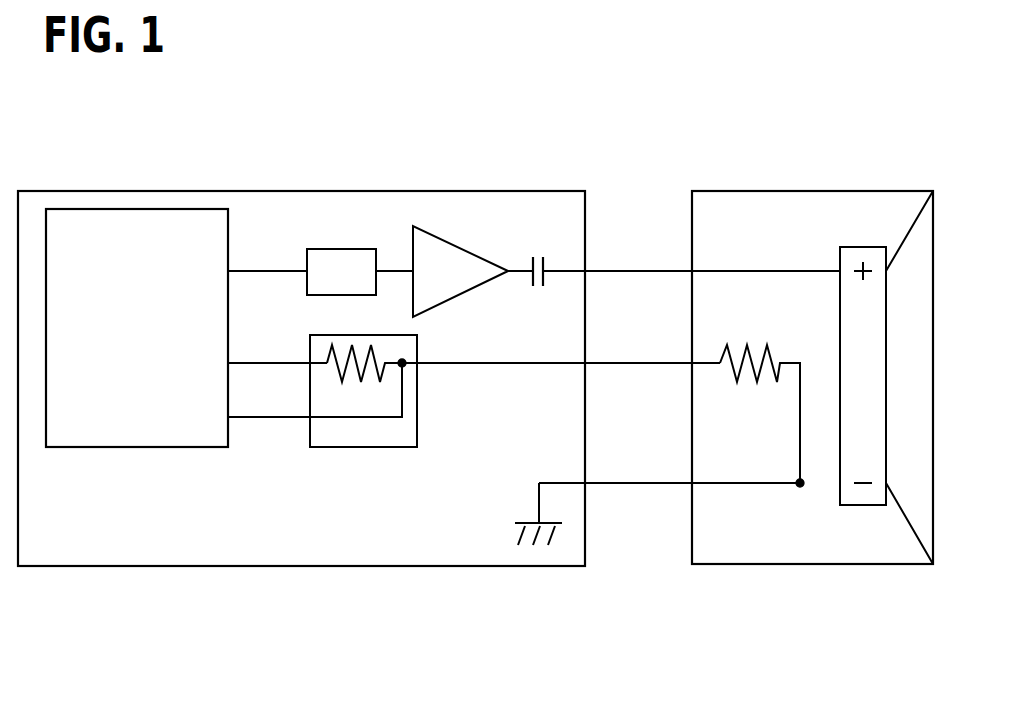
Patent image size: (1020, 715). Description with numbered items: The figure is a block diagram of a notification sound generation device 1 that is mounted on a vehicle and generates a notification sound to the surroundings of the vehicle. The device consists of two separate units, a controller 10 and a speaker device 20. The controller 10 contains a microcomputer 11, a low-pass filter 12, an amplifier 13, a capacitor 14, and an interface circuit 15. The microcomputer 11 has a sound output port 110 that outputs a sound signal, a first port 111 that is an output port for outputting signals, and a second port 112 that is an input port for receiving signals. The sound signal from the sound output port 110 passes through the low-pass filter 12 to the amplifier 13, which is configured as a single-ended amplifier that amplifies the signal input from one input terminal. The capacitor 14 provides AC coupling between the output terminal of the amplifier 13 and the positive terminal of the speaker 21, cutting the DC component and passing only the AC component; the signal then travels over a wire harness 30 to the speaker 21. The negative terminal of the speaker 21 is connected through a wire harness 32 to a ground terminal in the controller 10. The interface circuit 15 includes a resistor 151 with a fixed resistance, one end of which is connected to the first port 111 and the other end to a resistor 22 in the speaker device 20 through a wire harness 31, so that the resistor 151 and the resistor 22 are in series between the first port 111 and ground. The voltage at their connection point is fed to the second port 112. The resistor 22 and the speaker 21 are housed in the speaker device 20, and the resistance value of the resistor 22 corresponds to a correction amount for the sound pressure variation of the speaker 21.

The notification sound generation device 1 is at (512, 136).
The controller 10 is at (42, 191).
The microcomputer 11 is at (205, 209).
The sound output port 110 is at (236, 270).
The first port 111 is at (236, 362).
The second port 112 is at (236, 416).
The low-pass filter 12 is at (328, 249).
The amplifier 13 is at (462, 247).
The capacitor 14 is at (546, 257).
The interface circuit 15 is at (370, 450).
The resistor 151 is at (333, 362).
The speaker device 20 is at (856, 191).
The speaker 21 is at (895, 240).
The resistor 22 is at (748, 372).
The wire harness 30 is at (632, 270).
The wire harness 31 is at (633, 362).
The wire harness 32 is at (633, 482).